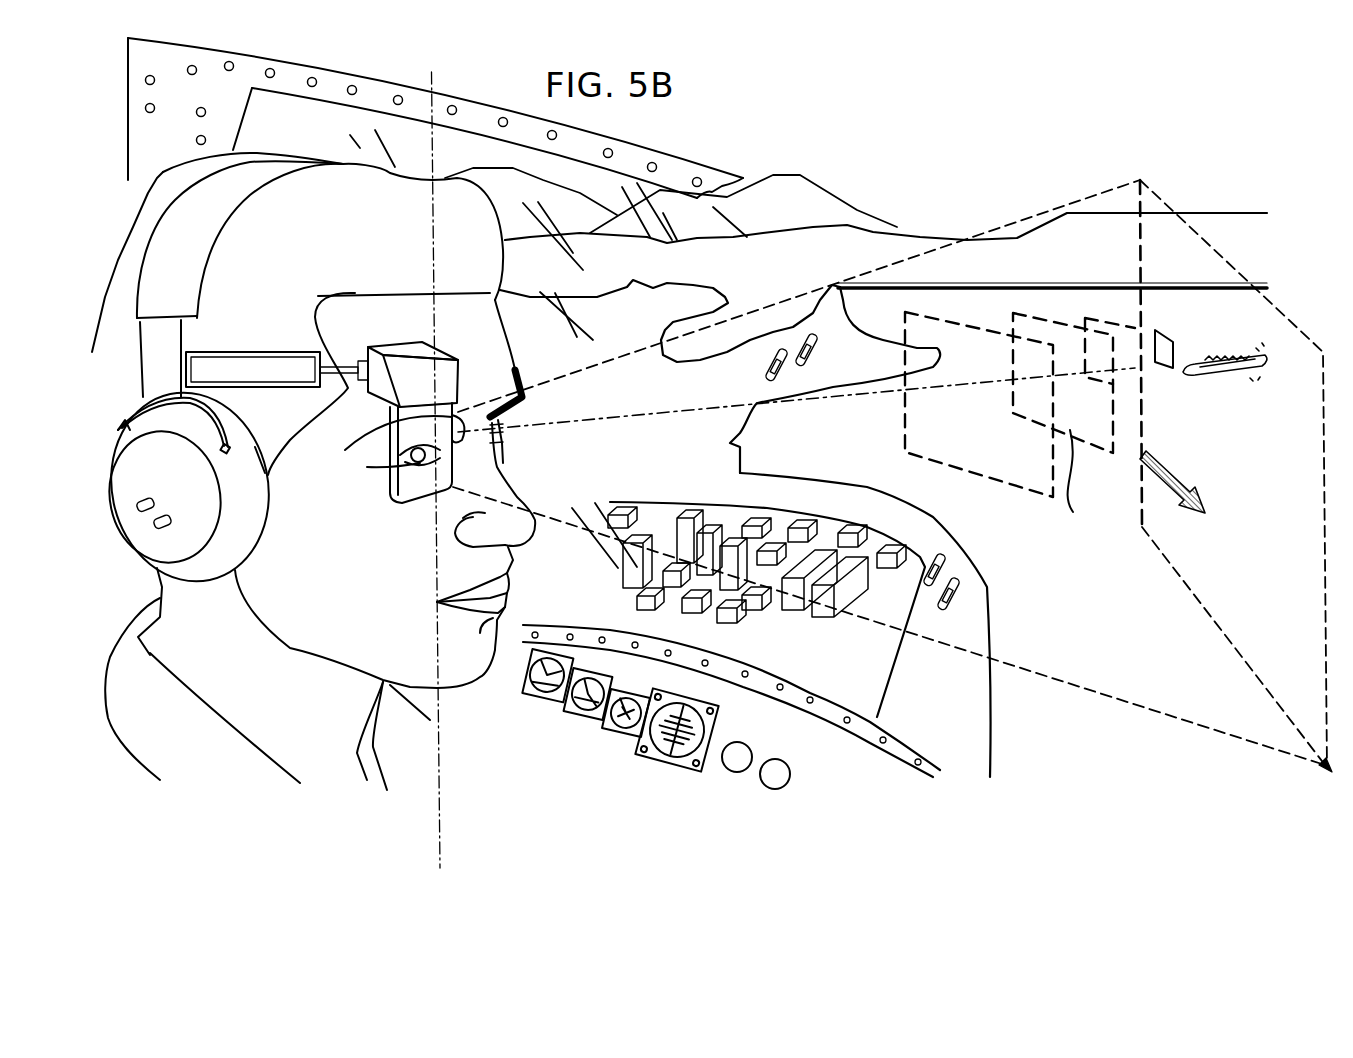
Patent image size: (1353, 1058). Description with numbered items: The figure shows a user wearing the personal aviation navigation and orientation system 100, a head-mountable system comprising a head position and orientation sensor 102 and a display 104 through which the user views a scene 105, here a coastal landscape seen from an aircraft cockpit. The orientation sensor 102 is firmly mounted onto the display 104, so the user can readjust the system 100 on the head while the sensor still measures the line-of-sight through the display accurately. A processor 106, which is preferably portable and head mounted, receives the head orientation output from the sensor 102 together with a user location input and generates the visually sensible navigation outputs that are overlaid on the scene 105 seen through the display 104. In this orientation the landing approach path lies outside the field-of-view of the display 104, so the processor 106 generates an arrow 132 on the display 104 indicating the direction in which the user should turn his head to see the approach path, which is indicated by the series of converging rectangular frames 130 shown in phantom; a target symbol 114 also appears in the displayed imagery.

The personal aviation navigation and orientation system 100 is at (386, 330).
The head position and orientation sensor 102 is at (453, 353).
The display 104 is at (396, 493).
The scene 105 is at (1205, 585).
The processor 106 is at (403, 349).
The target aircraft symbol 114 is at (1230, 378).
The converging rectangular frames 130 is at (1157, 360).
The arrow 132 is at (1190, 513).